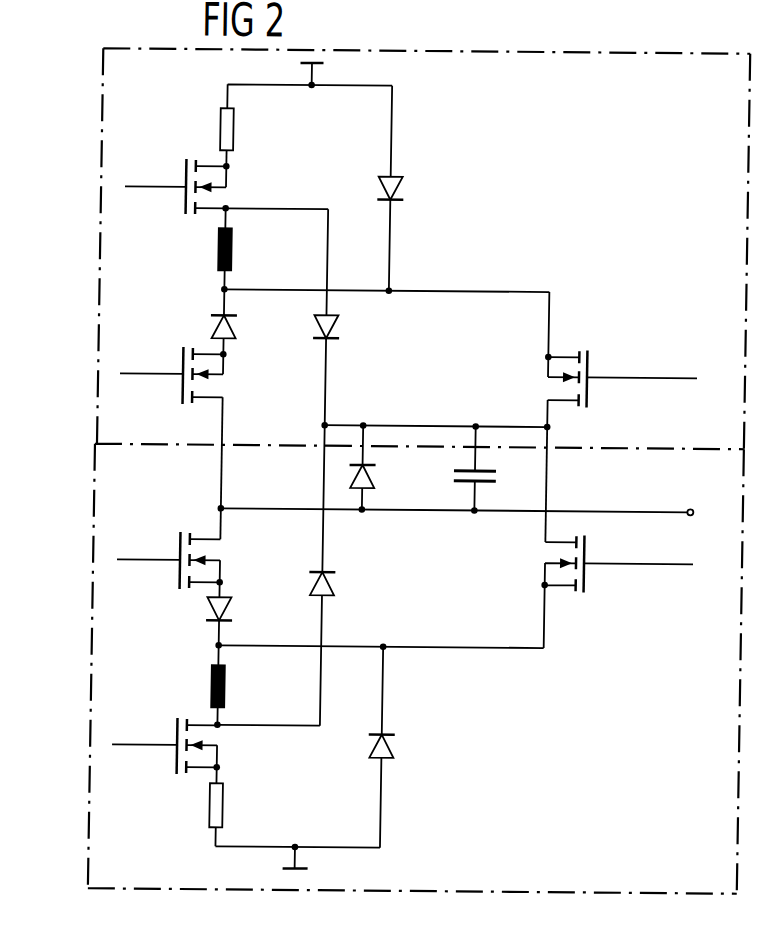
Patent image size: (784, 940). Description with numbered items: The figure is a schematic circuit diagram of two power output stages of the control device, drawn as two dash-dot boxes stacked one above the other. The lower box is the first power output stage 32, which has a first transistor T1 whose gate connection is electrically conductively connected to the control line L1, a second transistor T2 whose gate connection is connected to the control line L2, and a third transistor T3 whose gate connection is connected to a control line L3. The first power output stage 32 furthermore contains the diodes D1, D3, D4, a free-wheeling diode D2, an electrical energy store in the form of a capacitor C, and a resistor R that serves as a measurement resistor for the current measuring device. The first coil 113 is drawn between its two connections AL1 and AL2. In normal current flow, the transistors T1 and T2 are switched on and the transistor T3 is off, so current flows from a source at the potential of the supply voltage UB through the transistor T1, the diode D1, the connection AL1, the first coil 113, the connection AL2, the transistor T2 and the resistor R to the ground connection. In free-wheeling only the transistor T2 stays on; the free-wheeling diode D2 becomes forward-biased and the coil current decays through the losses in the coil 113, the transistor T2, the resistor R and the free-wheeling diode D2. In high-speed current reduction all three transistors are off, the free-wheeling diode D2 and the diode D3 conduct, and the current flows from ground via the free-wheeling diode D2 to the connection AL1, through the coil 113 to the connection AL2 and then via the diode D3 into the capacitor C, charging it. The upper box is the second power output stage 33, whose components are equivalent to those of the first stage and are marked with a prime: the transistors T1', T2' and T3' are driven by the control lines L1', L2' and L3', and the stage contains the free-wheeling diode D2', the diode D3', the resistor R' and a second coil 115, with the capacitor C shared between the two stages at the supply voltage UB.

The second power output stage 33 is at (94, 253).
The first power output stage 32 is at (92, 756).
The inductor / primary winding 115 is at (230, 251).
The first coil 113 is at (215, 674).
The resistor R' is at (254, 137).
The resistor R is at (241, 807).
The first transistor T1 is at (169, 562).
The second transistor T2 is at (166, 757).
The third transistor T3 is at (616, 592).
The transistor T1' is at (173, 371).
The transistor T2' is at (227, 183).
The transistor T3' is at (621, 360).
The diode D1 is at (234, 610).
The free-wheeling diode D2 is at (410, 748).
The diode D3 is at (351, 575).
The diode D4 is at (375, 478).
The free-wheeling diode D2' is at (419, 189).
The diode D3' is at (356, 317).
The capacitor C is at (495, 475).
The supply voltage UB is at (471, 510).
The control line L1 is at (138, 533).
The control line L2 is at (133, 716).
The control line L3 is at (678, 598).
The control line L1' is at (131, 406).
The control line L2' is at (135, 222).
The control line L3' is at (682, 349).
The connection AL1 is at (223, 648).
The connection AL2 is at (224, 728).